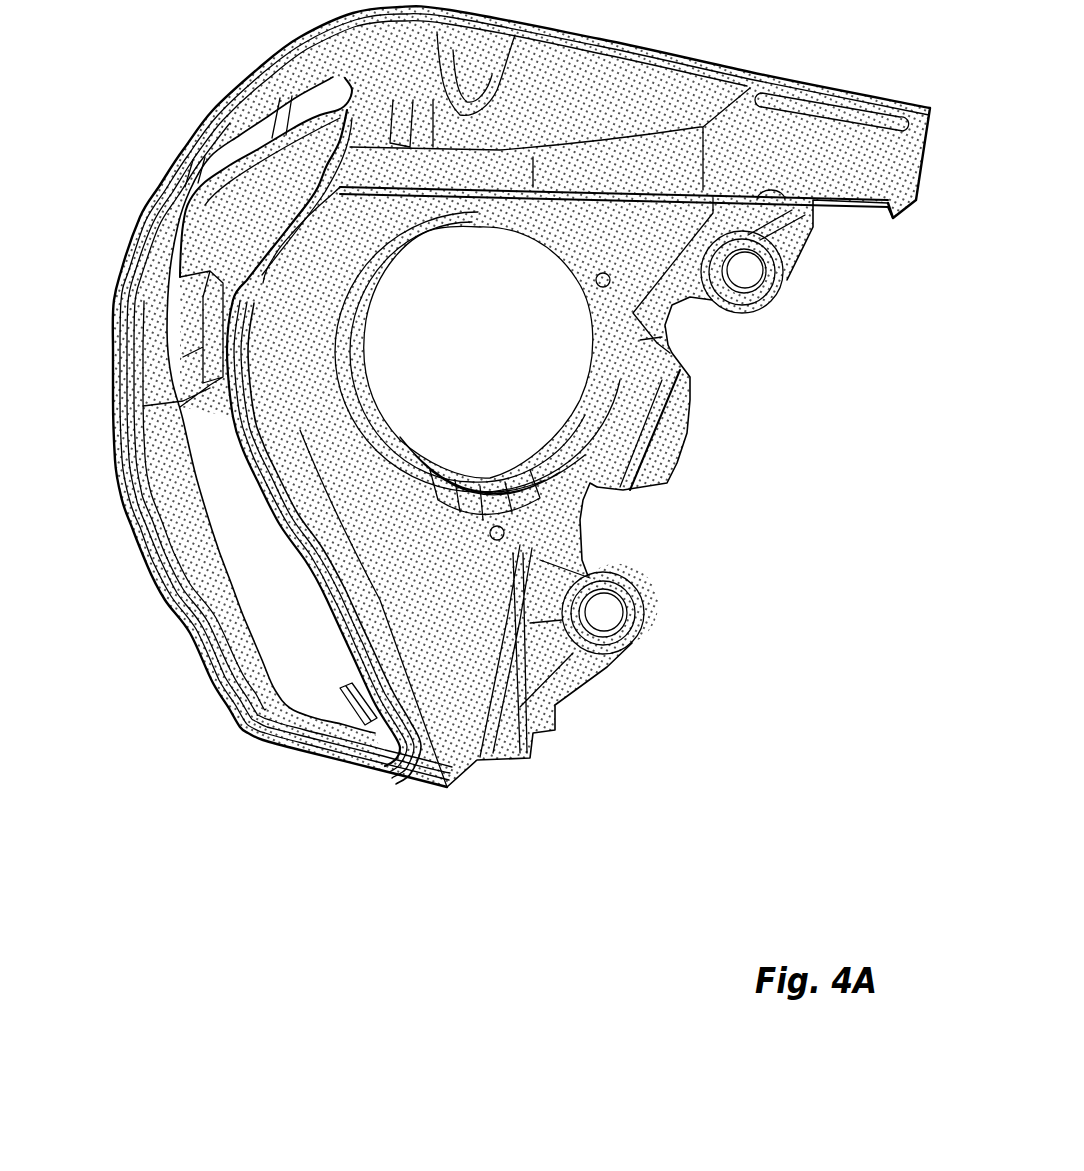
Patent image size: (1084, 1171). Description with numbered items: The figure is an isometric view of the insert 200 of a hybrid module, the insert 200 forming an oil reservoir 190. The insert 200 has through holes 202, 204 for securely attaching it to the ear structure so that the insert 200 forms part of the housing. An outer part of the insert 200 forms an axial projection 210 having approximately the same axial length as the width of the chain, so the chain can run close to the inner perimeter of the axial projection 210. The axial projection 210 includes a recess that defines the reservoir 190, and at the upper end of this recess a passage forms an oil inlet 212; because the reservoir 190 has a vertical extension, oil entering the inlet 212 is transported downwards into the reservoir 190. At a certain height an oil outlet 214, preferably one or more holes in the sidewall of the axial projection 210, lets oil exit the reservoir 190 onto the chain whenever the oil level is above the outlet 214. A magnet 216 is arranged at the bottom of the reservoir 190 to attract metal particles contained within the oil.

The reservoir 190 is at (224, 500).
The insert 200 is at (496, 413).
The through hole 202 is at (600, 607).
The through hole 204 is at (747, 278).
The axial projection 210 is at (302, 495).
The oil inlet 212 is at (334, 167).
The oil outlet 214 is at (504, 533).
The magnet 216 is at (543, 417).